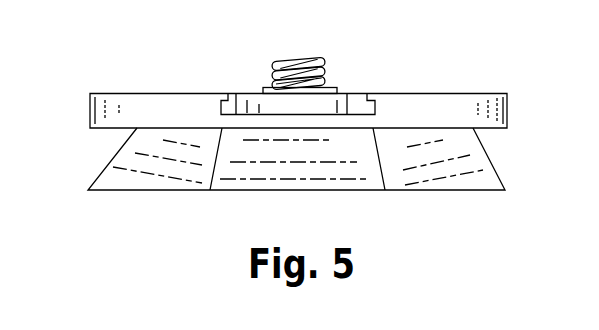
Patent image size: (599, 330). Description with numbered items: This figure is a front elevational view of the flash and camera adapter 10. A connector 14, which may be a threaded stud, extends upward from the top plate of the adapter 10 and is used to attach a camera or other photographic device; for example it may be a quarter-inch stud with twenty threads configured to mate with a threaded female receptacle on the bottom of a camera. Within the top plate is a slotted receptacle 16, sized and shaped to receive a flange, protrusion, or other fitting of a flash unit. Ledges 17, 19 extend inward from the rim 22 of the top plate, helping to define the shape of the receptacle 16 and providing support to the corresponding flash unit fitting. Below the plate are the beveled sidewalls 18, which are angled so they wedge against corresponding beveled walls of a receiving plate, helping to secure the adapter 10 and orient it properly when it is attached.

The adapter 10 is at (296, 119).
The connector 14 is at (308, 58).
The receptacle 16 is at (253, 102).
The ledge 17 is at (228, 94).
The sidewall 18 is at (168, 167).
The ledge 19 is at (369, 101).
The rim 22 is at (461, 105).